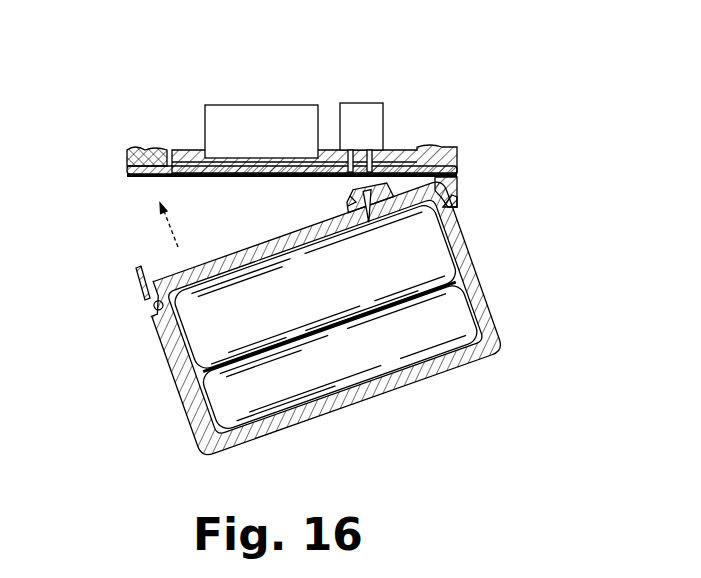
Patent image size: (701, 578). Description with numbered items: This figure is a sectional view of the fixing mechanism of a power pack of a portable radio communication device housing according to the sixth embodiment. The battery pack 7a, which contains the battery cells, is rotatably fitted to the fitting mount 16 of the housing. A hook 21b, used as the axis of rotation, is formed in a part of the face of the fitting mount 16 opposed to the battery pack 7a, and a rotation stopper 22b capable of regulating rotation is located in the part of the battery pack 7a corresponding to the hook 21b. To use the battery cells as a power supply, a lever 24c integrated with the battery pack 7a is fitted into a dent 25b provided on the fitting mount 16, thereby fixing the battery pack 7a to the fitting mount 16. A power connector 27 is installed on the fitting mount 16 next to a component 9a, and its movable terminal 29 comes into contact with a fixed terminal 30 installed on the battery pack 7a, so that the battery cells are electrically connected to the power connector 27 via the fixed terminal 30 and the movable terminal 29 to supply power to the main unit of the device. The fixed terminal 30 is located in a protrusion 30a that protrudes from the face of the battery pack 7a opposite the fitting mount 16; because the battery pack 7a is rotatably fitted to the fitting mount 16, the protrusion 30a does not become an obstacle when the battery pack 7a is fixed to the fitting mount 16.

The battery pack 7a is at (178, 404).
The electronic component 9a is at (257, 117).
The fitting mount 16 is at (432, 148).
The hook 21b is at (459, 203).
The rotation stopper 22b is at (457, 178).
The lever 24c is at (140, 283).
The dent 25b is at (127, 156).
The power connector 27 is at (368, 113).
The movable terminal 29 is at (348, 177).
The fixed terminal 30 is at (455, 209).
The protrusion 30a is at (350, 197).